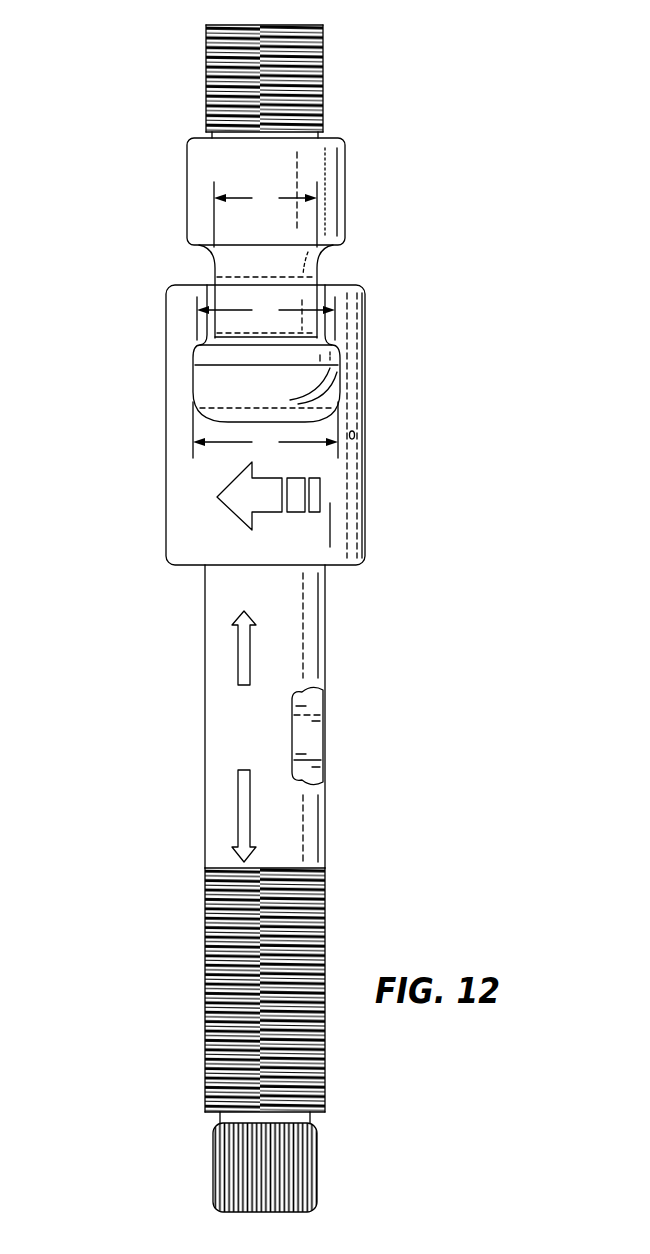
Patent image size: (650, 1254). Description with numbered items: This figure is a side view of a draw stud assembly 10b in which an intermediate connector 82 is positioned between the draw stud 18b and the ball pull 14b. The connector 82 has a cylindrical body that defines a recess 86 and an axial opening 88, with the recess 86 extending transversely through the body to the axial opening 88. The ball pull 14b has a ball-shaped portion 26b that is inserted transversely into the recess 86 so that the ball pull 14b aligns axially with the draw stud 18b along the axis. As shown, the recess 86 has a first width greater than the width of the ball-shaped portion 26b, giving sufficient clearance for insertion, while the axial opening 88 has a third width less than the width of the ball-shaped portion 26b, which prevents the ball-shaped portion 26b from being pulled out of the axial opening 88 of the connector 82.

The draw stud assembly 10b is at (102, 315).
The ball pull 14b is at (352, 165).
The axial opening 88 is at (207, 277).
The recess 86 is at (200, 387).
The ball-shaped portion 26b is at (293, 375).
The intermediate connector 82 is at (378, 473).
The draw stud 18b is at (192, 745).